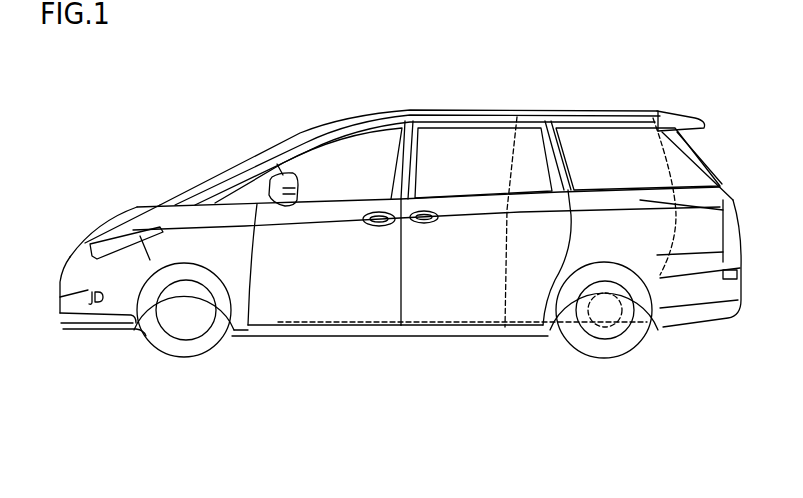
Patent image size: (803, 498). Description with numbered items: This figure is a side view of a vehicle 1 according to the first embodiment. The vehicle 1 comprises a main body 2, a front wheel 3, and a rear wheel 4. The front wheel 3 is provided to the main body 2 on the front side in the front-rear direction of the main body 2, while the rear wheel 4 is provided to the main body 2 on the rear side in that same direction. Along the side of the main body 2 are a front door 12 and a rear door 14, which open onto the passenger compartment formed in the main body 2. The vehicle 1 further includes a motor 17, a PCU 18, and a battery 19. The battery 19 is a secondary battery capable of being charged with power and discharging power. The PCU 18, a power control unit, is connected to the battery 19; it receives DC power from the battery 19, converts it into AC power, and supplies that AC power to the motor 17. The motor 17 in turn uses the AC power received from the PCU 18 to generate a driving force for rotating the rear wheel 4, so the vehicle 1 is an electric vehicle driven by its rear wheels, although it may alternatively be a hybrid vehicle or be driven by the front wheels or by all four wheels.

The vehicle 1 is at (620, 95).
The main body 2 is at (463, 108).
The front wheel 3 is at (188, 362).
The rear wheel 4 is at (650, 327).
The front door 12 is at (362, 307).
The rear door 14 is at (458, 307).
The motor 17 is at (607, 325).
The PCU 18 is at (528, 330).
The battery 19 is at (410, 333).